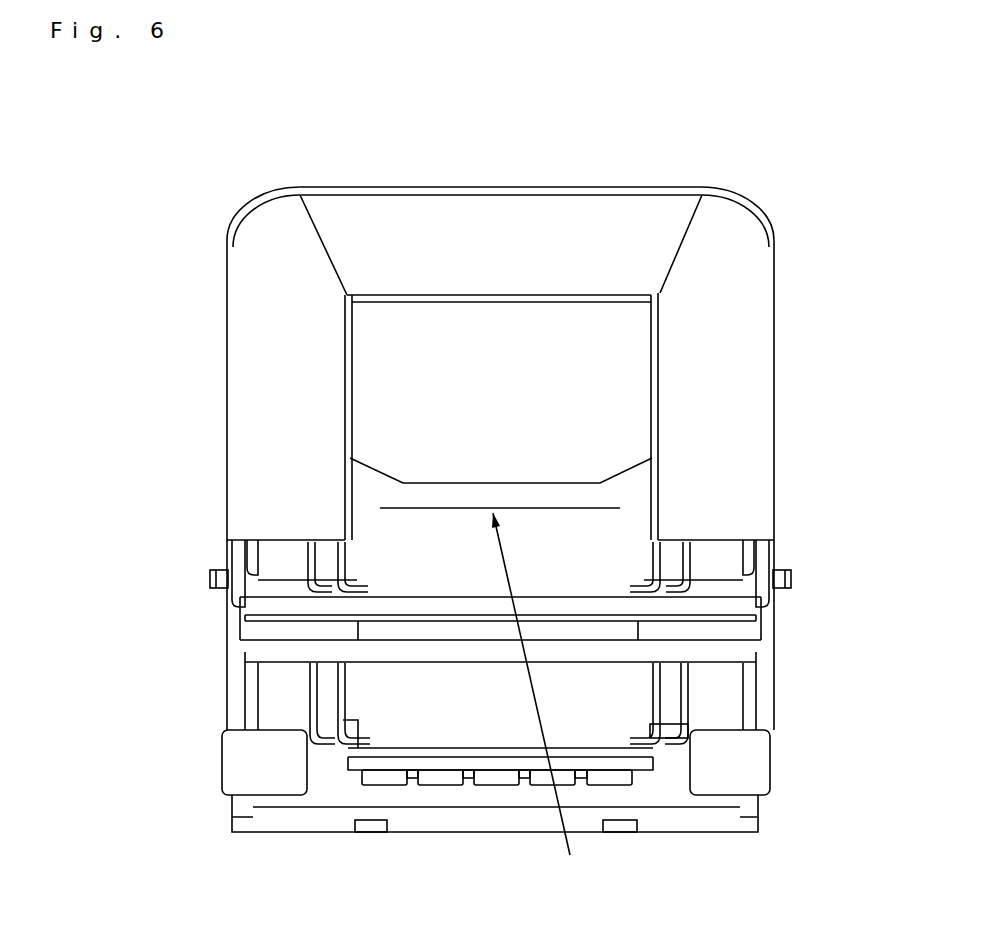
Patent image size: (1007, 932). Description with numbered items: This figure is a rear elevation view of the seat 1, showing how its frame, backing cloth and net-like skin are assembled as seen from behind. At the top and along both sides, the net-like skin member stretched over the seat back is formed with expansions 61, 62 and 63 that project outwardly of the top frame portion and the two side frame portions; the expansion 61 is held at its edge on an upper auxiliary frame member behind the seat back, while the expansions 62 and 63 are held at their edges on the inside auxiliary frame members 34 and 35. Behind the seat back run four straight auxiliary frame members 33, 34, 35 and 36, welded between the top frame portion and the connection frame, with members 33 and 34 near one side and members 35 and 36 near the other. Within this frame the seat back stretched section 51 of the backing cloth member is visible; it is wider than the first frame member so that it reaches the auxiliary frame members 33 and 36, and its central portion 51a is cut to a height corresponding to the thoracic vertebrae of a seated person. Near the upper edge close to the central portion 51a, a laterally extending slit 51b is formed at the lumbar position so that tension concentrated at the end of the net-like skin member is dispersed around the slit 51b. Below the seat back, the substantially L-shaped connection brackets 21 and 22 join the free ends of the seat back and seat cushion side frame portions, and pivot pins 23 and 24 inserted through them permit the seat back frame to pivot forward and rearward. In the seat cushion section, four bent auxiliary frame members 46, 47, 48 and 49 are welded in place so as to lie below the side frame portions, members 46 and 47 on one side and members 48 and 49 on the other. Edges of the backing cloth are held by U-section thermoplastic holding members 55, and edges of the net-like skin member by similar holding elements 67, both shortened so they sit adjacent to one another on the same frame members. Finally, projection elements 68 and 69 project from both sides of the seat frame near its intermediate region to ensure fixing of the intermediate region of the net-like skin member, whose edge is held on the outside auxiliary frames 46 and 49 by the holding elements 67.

The seat 1 is at (820, 276).
The connection bracket 21 is at (230, 615).
The connection bracket 22 is at (770, 630).
The pivot pin 23 is at (212, 580).
The pivot pin 24 is at (792, 578).
The auxiliary frame member 33 is at (310, 548).
The auxiliary frame member 34 is at (348, 552).
The auxiliary frame member 35 is at (650, 552).
The auxiliary frame member 36 is at (692, 553).
The auxiliary frame member 46 is at (310, 690).
The auxiliary frame member 47 is at (350, 696).
The auxiliary frame member 48 is at (650, 690).
The auxiliary frame member 49 is at (690, 697).
The seat back stretched section 51 is at (433, 525).
The central portion 51a is at (480, 483).
The slit 51b is at (550, 702).
The holding member 55 is at (442, 785).
The expansion 61 is at (492, 218).
The expansion 62 is at (250, 383).
The expansion 63 is at (748, 388).
The holding element 67 is at (377, 782).
The projection element 68 is at (248, 765).
The projection element 69 is at (748, 762).